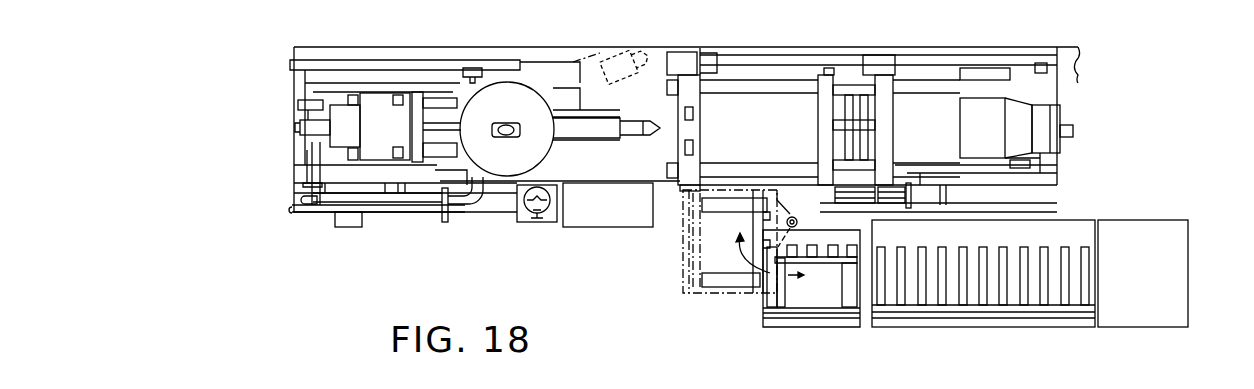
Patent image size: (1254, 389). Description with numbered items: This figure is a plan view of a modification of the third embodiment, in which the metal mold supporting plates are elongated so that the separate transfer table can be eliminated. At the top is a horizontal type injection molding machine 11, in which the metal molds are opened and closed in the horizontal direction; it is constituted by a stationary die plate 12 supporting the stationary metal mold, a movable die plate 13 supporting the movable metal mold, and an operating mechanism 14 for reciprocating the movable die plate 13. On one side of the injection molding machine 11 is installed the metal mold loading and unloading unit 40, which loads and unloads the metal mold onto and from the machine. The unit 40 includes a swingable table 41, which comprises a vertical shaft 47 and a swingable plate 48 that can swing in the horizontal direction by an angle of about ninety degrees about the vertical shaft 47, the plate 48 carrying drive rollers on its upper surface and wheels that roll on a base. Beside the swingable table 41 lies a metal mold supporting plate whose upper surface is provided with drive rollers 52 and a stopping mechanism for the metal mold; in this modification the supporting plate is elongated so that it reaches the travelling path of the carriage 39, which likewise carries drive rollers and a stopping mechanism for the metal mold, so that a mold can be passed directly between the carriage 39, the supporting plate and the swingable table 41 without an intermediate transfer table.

The injection molding machine 11 is at (485, 227).
The stationary die plate 12 is at (695, 128).
The movable die plate 13 is at (823, 123).
The operating mechanism 14 is at (1017, 107).
The carriage 39 is at (1178, 286).
The metal mold loading and unloading unit 40 is at (650, 298).
The swingable table 41 is at (710, 310).
The vertical shaft 47 is at (799, 222).
The swingable plate 48 is at (766, 327).
The drive rollers 52 is at (1089, 250).